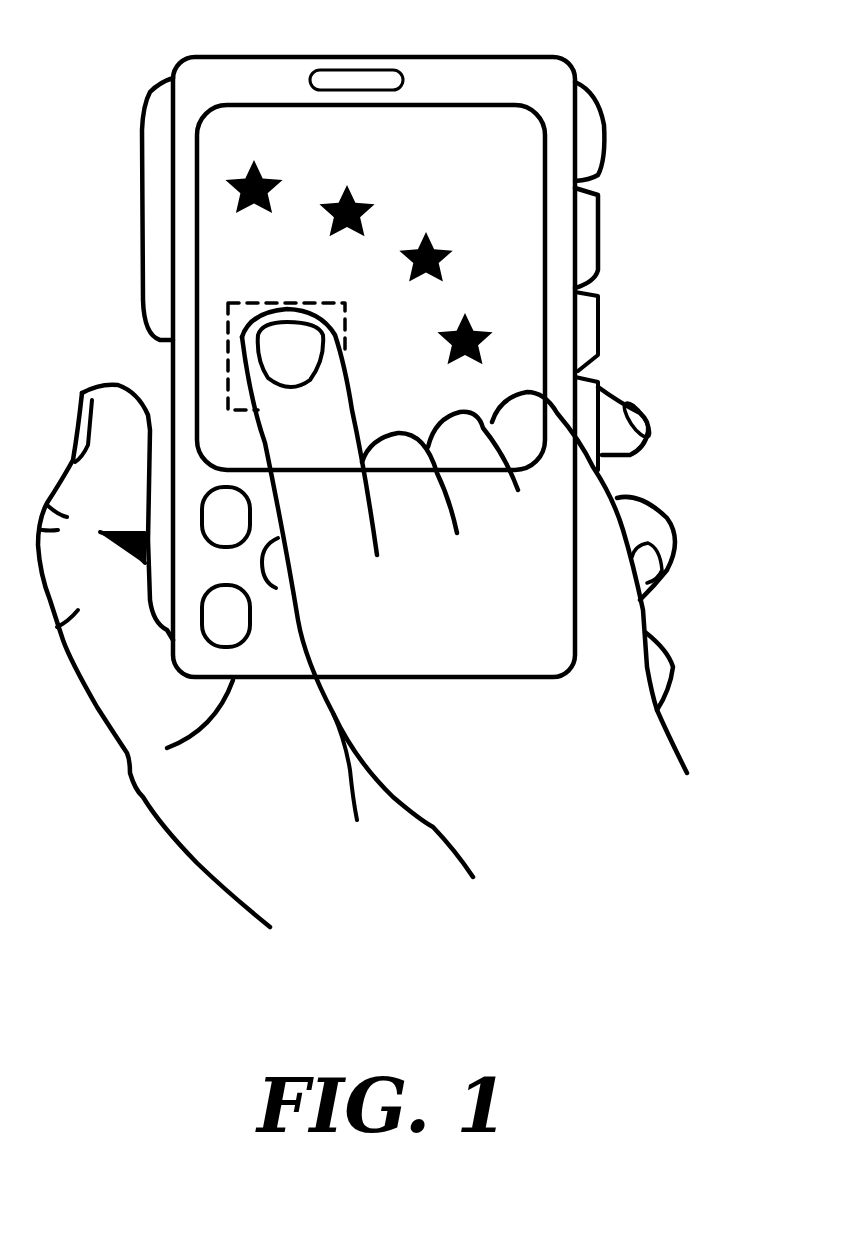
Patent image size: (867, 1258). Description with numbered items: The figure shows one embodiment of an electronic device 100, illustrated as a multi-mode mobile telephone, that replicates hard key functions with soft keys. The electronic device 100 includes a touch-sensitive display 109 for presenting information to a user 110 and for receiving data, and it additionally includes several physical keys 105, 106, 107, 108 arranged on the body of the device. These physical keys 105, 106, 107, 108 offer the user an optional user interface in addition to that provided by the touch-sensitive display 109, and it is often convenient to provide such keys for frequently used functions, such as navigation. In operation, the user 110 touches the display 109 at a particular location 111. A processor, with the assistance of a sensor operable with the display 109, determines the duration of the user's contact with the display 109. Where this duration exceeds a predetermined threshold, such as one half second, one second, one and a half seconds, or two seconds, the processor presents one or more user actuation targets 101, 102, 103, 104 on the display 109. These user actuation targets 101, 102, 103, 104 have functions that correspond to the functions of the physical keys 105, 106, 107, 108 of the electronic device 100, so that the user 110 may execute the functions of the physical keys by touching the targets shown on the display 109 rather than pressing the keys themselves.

The electronic device 100 is at (443, 53).
The user actuation target 101 is at (258, 163).
The user actuation target 102 is at (348, 192).
The user actuation target 103 is at (430, 238).
The user actuation target 104 is at (470, 315).
The physical key 105 is at (158, 183).
The physical key 106 is at (593, 143).
The physical key 107 is at (582, 233).
The physical key 108 is at (225, 616).
The touch-sensitive display 109 is at (197, 223).
The user 110 is at (538, 520).
The particular location 111 is at (307, 303).